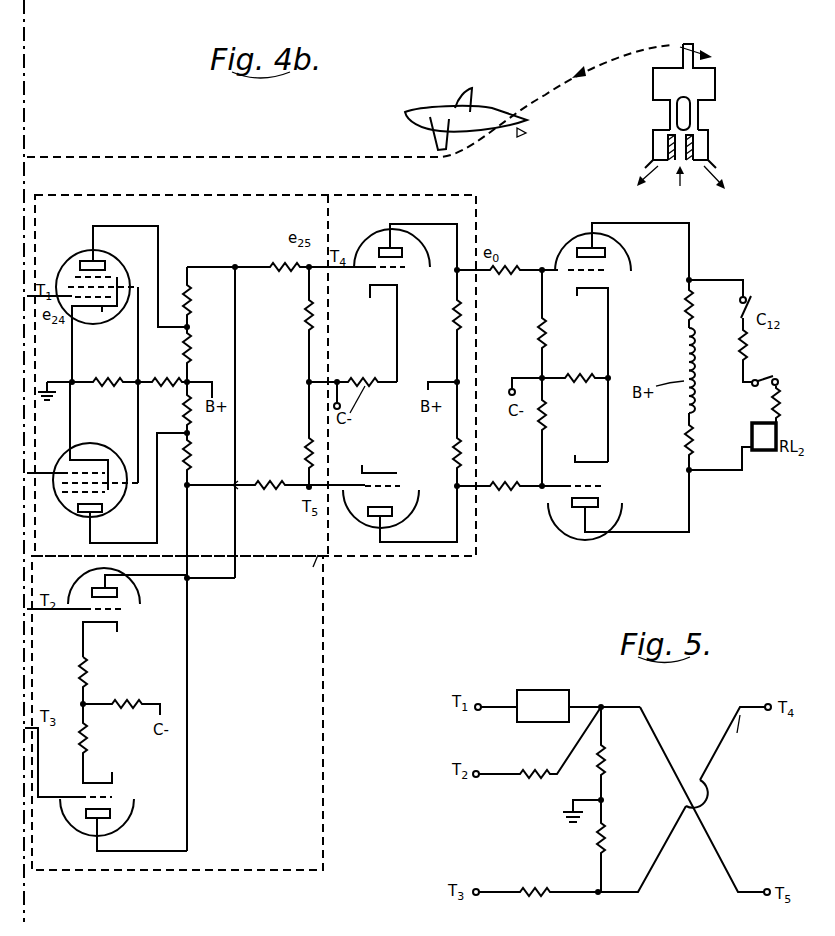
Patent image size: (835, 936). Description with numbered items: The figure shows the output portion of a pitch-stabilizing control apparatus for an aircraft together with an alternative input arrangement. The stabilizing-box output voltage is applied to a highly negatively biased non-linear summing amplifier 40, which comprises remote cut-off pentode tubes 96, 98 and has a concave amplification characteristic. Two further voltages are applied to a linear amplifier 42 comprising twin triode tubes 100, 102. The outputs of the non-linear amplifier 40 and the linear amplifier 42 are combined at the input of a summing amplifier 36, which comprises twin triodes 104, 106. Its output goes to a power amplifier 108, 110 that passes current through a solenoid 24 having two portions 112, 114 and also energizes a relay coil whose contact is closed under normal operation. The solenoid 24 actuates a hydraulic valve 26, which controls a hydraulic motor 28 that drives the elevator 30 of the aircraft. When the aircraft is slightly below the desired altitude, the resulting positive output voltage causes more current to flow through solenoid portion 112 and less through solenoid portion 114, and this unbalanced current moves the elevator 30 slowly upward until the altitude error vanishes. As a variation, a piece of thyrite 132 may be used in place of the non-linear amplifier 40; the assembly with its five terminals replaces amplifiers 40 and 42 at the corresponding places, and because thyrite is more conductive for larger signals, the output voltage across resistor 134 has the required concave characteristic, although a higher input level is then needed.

In FIG. 4B, the solenoid 24 is at (696, 375).
In FIG. 4B, the hydraulic valve 26 is at (712, 117).
In FIG. 4B, the hydraulic motor 28 is at (722, 65).
In FIG. 4B, the elevator 30 is at (517, 108).
In FIG. 4B, the summing amplifier 36 is at (445, 552).
In FIG. 4B, the non-linear summing amplifier 40 is at (273, 200).
In FIG. 4B, the linear amplifier 42 is at (310, 758).
In FIG. 4B, the remote cut-off pentode tube 96 is at (118, 263).
In FIG. 4B, the remote cut-off pentode tube 98 is at (115, 497).
In FIG. 4B, the twin triode tube 100 is at (128, 603).
In FIG. 4B, the twin triode tube 102 is at (118, 815).
In FIG. 4B, the twin triode 104 is at (408, 256).
In FIG. 4B, the twin triode 106 is at (402, 522).
In FIG. 4B, the power amplifier tube 108 is at (620, 264).
In FIG. 4B, the power amplifier tube 110 is at (612, 518).
In FIG. 4B, the solenoid portion 112 is at (696, 362).
In FIG. 4B, the solenoid portion 114 is at (697, 405).
In FIG. 5, the thyrite 132 is at (550, 698).
In FIG. 5, the resistor 134 is at (604, 773).